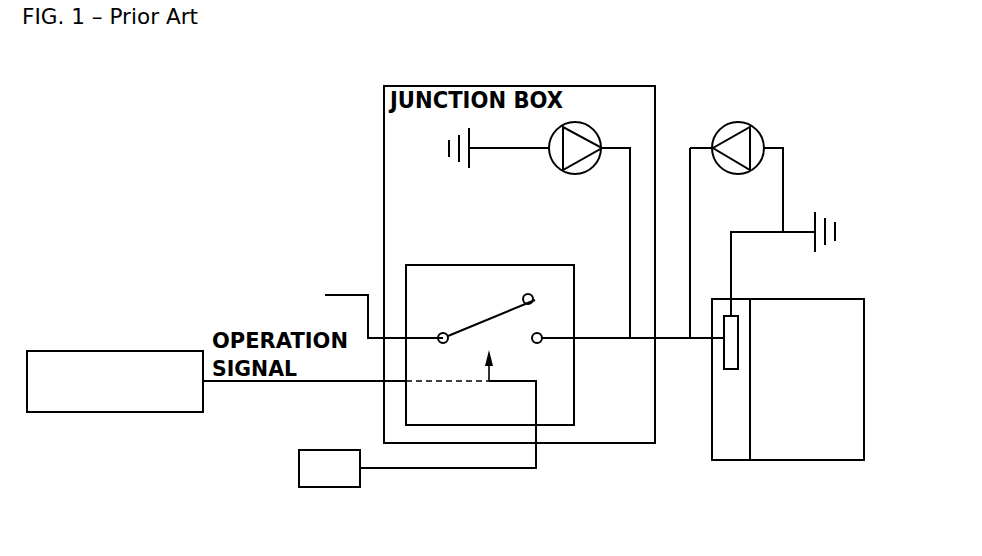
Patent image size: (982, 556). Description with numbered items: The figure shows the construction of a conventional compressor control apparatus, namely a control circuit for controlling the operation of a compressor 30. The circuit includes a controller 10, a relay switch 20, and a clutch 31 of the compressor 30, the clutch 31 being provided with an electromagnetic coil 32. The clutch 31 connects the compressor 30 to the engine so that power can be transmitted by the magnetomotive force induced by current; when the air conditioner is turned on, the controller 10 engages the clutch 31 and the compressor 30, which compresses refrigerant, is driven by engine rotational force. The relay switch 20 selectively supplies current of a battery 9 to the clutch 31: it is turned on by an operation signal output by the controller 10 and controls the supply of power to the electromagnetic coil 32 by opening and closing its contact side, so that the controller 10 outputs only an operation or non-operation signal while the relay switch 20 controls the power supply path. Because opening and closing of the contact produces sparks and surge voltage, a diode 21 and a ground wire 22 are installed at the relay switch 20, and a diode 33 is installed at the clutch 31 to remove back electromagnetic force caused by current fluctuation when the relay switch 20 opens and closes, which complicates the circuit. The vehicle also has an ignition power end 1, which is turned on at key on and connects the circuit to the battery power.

The ignition power end 1 is at (299, 468).
The battery 9 is at (306, 285).
The controller 10 is at (125, 351).
The relay switch 20 is at (496, 265).
The diode 21 is at (588, 174).
The ground wire 22 is at (495, 148).
The compressor 30 is at (862, 290).
The clutch 31 is at (731, 462).
The electromagnetic coil 32 is at (731, 372).
The diode 33 is at (738, 122).